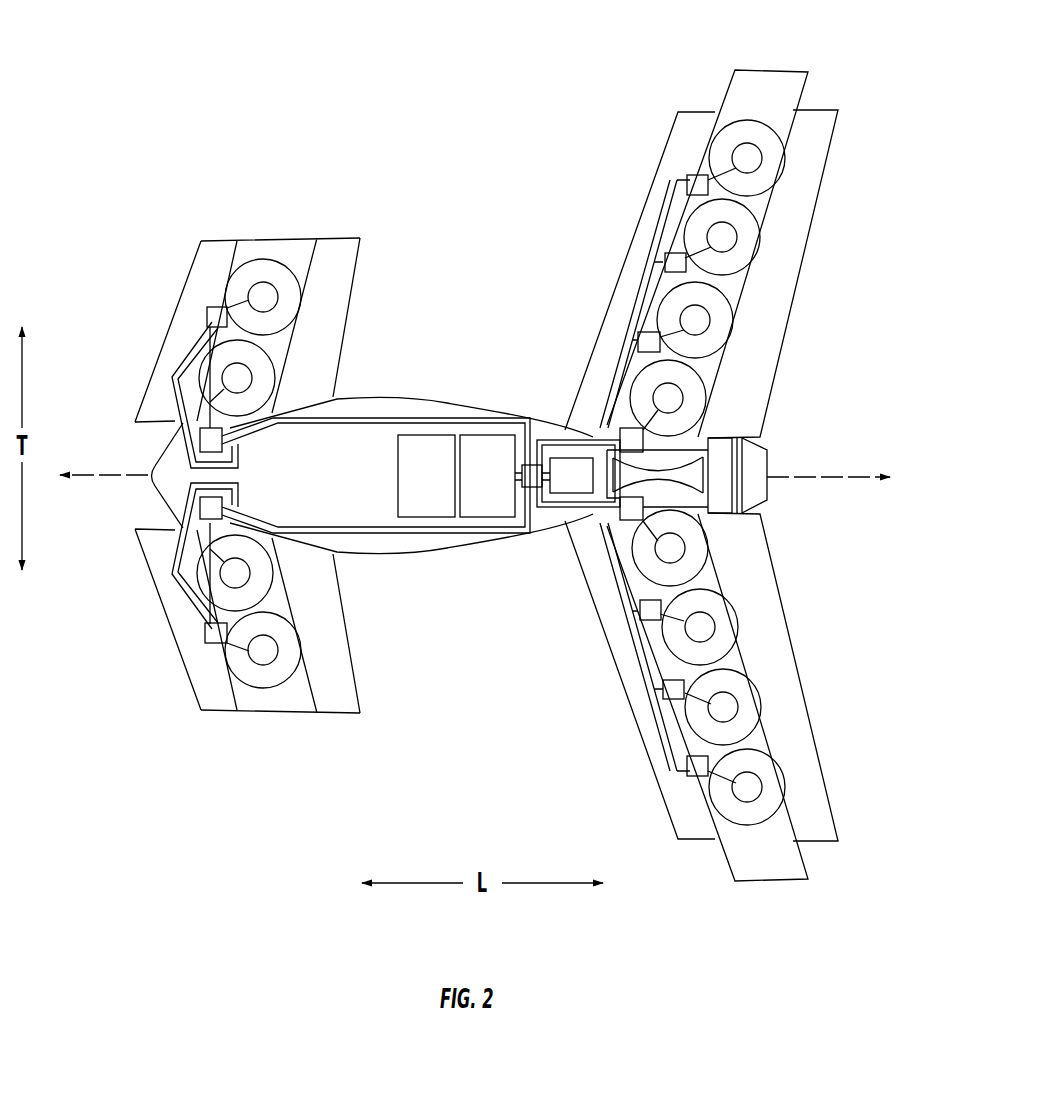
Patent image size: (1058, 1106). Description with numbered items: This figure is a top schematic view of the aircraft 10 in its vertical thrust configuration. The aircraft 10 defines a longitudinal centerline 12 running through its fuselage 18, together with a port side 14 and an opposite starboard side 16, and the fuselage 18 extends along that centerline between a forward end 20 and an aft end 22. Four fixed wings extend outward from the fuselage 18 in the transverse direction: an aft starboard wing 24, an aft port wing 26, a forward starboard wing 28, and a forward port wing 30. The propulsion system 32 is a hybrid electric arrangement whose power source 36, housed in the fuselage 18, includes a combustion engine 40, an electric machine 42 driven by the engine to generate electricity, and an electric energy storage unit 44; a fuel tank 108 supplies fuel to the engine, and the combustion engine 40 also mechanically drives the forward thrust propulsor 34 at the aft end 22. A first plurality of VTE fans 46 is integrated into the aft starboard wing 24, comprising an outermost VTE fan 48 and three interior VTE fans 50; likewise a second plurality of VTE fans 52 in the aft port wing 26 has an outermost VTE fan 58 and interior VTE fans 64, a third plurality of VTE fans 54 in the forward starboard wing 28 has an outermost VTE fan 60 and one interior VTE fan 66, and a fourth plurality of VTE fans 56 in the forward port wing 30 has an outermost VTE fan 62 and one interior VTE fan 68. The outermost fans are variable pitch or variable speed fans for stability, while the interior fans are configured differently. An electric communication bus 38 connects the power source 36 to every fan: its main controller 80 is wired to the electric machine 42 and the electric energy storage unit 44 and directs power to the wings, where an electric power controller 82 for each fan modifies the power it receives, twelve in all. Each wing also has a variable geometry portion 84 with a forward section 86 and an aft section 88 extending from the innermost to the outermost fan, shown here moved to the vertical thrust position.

The aircraft 10 is at (463, 76).
The longitudinal centerline 12 is at (838, 477).
The port side 14 is at (435, 750).
The starboard side 16 is at (386, 166).
The fuselage 18 is at (352, 433).
The forward end 20 is at (128, 490).
The aft end 22 is at (828, 498).
The aft starboard wing 24 is at (838, 92).
The aft port wing 26 is at (855, 770).
The forward starboard wing 28 is at (142, 306).
The forward port wing 30 is at (150, 625).
The propulsion system 32 is at (507, 383).
The forward thrust propulsor 34 is at (757, 455).
The power source 36 is at (585, 498).
The electric communication bus 38 is at (525, 407).
The combustion engine 40 is at (615, 490).
The electric machine 42 is at (559, 490).
The electric energy storage unit 44 is at (475, 491).
The first plurality of VTE fans 46 is at (760, 90).
The outermost VTE fan 48 is at (770, 160).
The interior VTE fan 50 is at (727, 318).
The second plurality of VTE fans 52 is at (742, 838).
The third plurality of VTE fans 54 is at (280, 236).
The fourth plurality of VTE fans 56 is at (262, 715).
The outermost VTE fan 58 is at (770, 778).
The outermost VTE fan 60 is at (290, 293).
The outermost VTE fan 62 is at (290, 662).
The interior VTE fan 64 is at (700, 547).
The interior VTE fan 66 is at (262, 380).
The interior VTE fan 68 is at (260, 555).
The main controller 80 is at (527, 484).
The electric power controller 82 is at (208, 315).
The variable geometry portion 84 is at (431, 475).
The forward section 86 is at (640, 222).
The aft section 88 is at (358, 255).
The fuel tank 108 is at (411, 491).